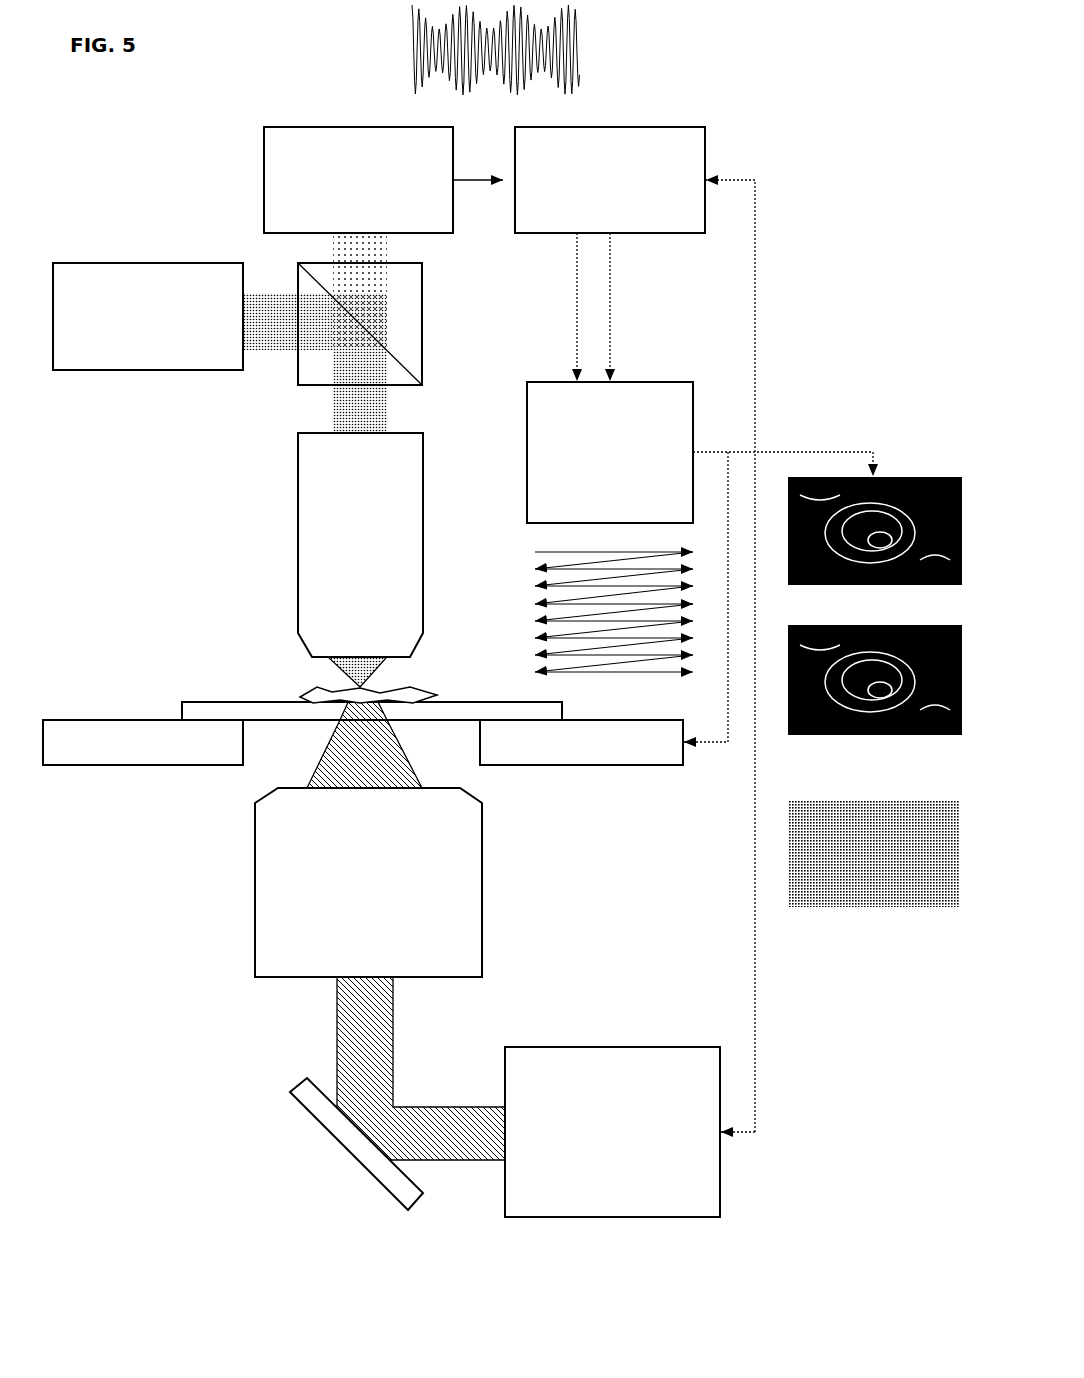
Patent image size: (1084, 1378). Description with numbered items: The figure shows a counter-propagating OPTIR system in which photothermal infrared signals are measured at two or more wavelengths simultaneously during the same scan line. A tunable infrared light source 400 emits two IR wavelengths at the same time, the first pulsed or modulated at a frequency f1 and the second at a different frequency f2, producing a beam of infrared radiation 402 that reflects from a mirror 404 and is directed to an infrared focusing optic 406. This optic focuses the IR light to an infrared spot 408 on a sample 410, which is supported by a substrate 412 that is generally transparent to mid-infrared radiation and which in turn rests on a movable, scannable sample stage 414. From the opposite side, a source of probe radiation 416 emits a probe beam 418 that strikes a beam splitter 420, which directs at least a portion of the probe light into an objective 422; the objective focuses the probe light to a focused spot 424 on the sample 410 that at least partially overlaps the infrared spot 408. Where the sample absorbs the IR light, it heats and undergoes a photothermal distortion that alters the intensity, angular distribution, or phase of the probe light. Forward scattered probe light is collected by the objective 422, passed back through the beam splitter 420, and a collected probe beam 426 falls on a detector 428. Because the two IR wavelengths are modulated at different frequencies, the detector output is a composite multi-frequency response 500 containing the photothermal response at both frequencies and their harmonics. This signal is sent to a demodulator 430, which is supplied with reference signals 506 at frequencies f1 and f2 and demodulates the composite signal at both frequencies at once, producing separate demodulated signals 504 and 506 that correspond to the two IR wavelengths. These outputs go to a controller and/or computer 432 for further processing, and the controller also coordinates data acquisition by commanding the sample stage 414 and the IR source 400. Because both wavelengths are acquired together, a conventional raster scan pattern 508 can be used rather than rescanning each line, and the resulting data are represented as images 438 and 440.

The composite multi-frequency response 500 is at (407, 62).
The detector 428 is at (358, 180).
The demodulator 430 is at (610, 180).
The controller and/or computer 432 is at (610, 452).
The source of probe radiation 416 is at (148, 316).
The collected probe beam 426 is at (327, 256).
The probe beam 418 is at (268, 356).
The beam splitter 420 is at (292, 395).
The objective 422 is at (290, 510).
The focused spot 424 is at (355, 688).
The sample 410 is at (303, 688).
The substrate 412 is at (195, 700).
The sample stage 414 is at (153, 718).
The infrared spot 408 is at (337, 703).
The infrared focusing optic 406 is at (288, 988).
The beam of infrared radiation 402 is at (437, 1100).
The mirror 404 is at (332, 1140).
The tunable infrared light source 400 is at (612, 1132).
The demodulated signal 504 is at (565, 312).
The reference signals / demodulated signal 506 is at (618, 326).
The raster scan pattern 508 is at (535, 545).
The reconstructed images 438 is at (925, 467).
The difference / processed image 440 is at (862, 913).